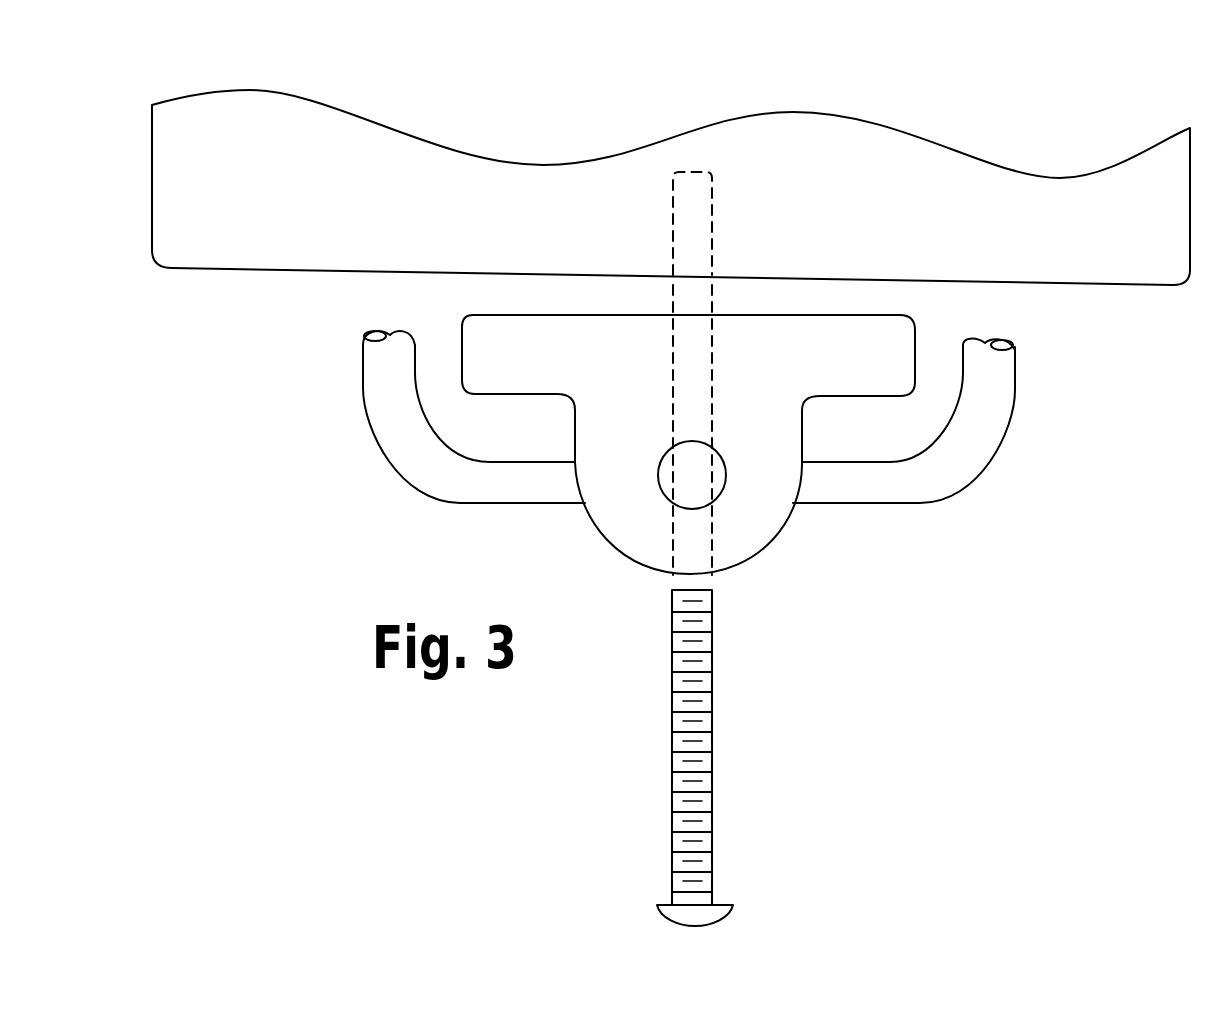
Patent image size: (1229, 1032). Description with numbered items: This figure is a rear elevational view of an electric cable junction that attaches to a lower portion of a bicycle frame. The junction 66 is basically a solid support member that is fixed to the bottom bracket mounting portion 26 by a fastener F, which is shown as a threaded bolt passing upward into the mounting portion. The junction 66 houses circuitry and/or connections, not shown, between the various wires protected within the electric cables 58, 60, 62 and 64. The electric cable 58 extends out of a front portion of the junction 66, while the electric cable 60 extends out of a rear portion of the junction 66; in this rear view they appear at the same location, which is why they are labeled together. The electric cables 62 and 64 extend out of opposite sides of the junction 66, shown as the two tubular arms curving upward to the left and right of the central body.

The bottom bracket mounting portion 26 is at (885, 160).
The junction 66 is at (865, 343).
The electric cable 64 is at (392, 415).
The electric cable 62 is at (982, 412).
The electric cable 58 is at (798, 511).
The electric cable 60 is at (718, 470).
The fastener F is at (713, 677).